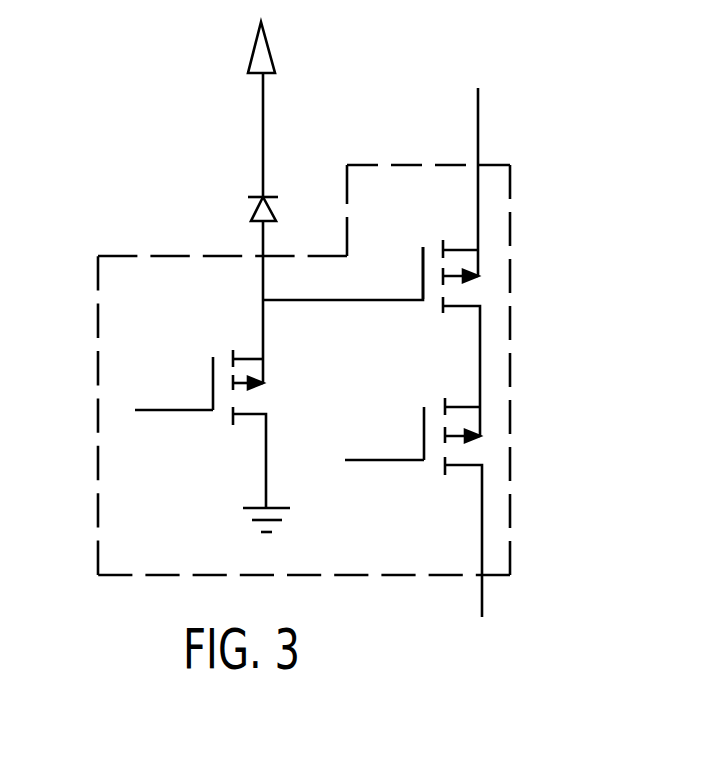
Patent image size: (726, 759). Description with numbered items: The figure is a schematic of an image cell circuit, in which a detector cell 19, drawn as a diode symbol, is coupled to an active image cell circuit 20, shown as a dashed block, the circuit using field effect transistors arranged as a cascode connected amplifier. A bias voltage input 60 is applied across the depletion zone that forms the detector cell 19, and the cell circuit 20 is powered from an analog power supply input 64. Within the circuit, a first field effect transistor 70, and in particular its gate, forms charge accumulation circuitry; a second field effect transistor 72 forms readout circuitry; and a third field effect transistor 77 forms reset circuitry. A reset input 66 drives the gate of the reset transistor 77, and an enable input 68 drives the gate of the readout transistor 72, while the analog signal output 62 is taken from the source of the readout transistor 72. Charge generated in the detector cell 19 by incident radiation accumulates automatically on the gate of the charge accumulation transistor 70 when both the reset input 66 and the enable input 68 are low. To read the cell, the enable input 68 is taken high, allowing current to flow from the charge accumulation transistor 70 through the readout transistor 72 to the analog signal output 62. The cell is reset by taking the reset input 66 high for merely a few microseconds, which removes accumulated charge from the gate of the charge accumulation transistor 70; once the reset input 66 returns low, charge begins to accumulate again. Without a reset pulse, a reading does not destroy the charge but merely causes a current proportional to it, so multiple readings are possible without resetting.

The VBIAS bias voltage input 60 is at (254, 50).
The image detector cell 19 is at (262, 196).
The VANA analog power supply input 64 is at (478, 95).
The FET M11A 70 is at (480, 271).
The FET M11B 72 is at (482, 421).
The FET M11C 77 is at (265, 370).
The RES-R-1 reset input 66 is at (162, 410).
The ENA-R-1 enable input 68 is at (378, 508).
The SIGOUT analog signal output 62 is at (483, 606).
The active image cell circuit 20 is at (515, 538).